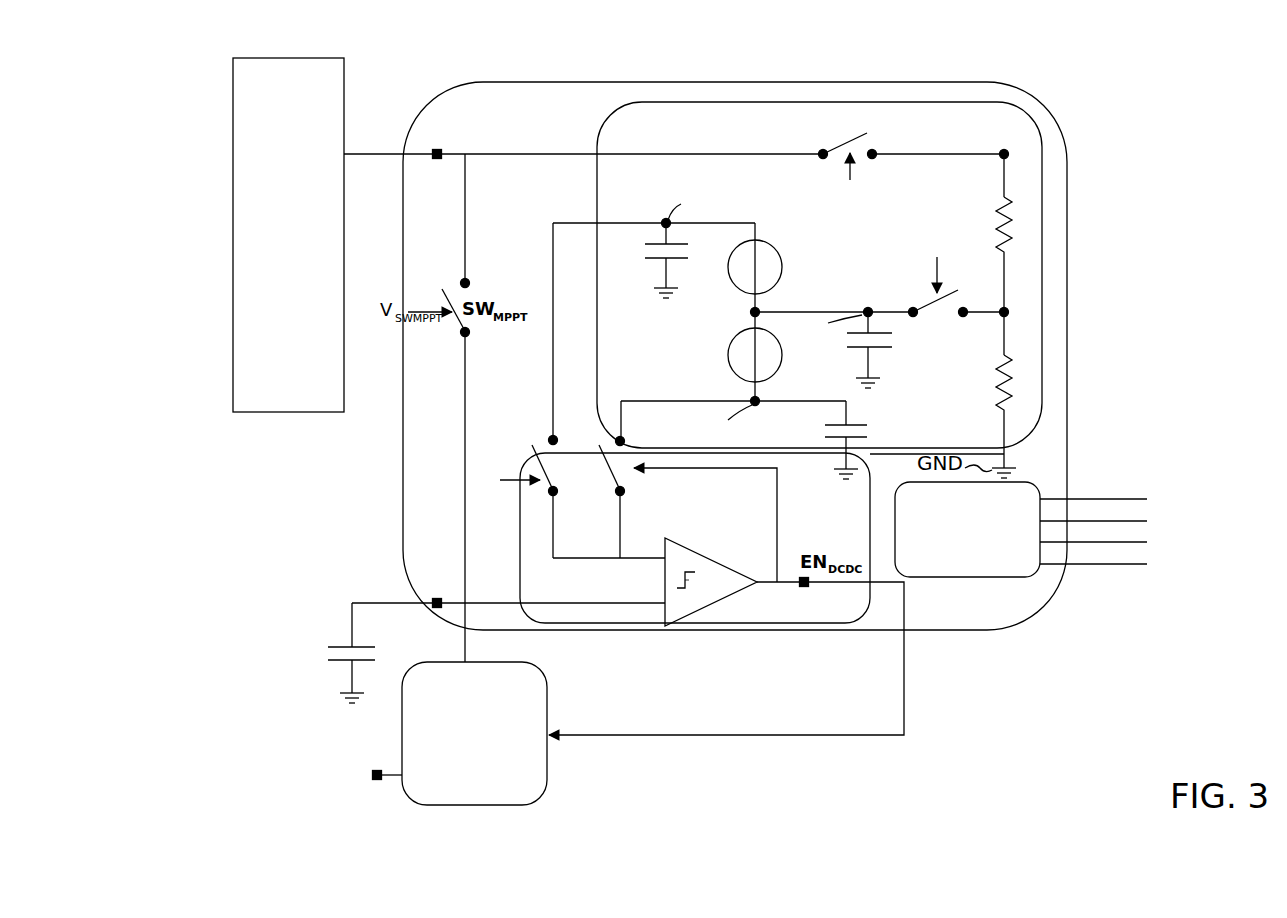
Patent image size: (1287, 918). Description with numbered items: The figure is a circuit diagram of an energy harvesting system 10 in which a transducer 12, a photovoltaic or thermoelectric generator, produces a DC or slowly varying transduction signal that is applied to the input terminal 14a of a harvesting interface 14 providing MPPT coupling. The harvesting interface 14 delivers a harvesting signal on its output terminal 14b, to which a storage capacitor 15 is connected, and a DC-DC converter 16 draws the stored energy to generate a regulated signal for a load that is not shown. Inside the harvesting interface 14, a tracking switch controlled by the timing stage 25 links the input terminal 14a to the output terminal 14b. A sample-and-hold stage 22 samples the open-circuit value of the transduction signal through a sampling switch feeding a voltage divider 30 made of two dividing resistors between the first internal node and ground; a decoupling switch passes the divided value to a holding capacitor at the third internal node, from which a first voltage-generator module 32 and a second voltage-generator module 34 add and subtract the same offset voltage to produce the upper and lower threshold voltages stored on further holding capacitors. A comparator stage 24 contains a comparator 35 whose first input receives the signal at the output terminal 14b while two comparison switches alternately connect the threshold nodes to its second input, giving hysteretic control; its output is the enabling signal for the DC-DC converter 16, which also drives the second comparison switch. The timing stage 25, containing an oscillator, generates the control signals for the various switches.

The energy harvesting system 10 is at (420, 62).
The transducer 12 is at (286, 413).
The harvesting interface 14 is at (793, 79).
The input terminal 14a is at (437, 160).
The output terminal 14b is at (437, 608).
The storage capacitor 15 is at (339, 645).
The DC-DC converter 16 is at (536, 790).
The sample-and-hold stage 22 is at (604, 126).
The comparator stage 24 is at (873, 612).
The timing stage 25 is at (988, 571).
The voltage divider 30 is at (1016, 290).
The first voltage-generator module 32 is at (771, 251).
The second voltage-generator module 34 is at (735, 350).
The comparator 35 is at (735, 580).